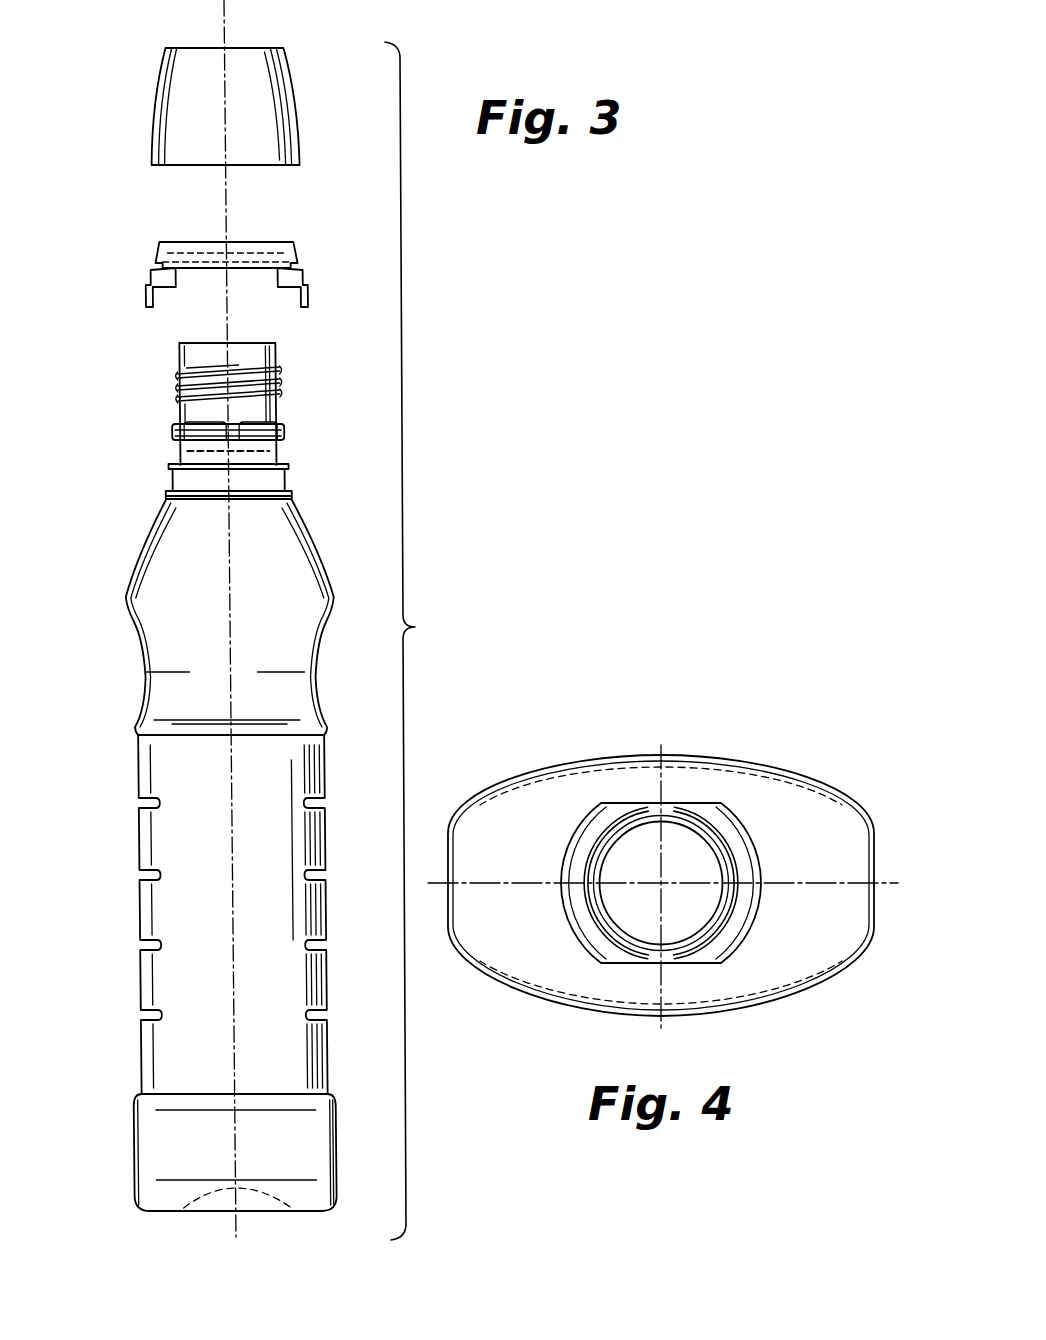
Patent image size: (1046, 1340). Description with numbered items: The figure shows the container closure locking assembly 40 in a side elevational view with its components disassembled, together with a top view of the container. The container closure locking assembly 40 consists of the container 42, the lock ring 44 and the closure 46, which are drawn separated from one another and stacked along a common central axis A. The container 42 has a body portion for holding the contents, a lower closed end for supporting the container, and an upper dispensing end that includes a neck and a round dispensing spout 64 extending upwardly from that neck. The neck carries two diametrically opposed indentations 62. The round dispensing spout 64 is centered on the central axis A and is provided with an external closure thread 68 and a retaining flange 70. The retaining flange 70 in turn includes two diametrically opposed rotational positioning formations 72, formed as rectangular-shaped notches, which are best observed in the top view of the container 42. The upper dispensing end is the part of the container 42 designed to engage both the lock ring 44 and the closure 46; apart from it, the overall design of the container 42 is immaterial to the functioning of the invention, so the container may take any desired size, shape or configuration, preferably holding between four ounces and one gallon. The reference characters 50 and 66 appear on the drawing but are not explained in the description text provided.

In FIG. 3, the central axis A is at (224, 23).
In FIG. 3, the container closure locking assembly 40 is at (420, 641).
In FIG. 4, the container 42 is at (808, 762).
In FIG. 3, the lock ring 44 is at (126, 264).
In FIG. 3, the closure 46 is at (128, 104).
In FIG. 3, the container body 50 is at (106, 562).
In FIG. 4, the indentations 62 is at (625, 800).
In FIG. 3, the round dispensing spout 64 is at (283, 342).
In FIG. 4, the round dispensing spout 64 is at (730, 858).
In FIG. 3, the opening 66 is at (223, 306).
In FIG. 3, the external closure thread 68 is at (286, 377).
In FIG. 3, the retaining flange 70 is at (286, 436).
In FIG. 4, the retaining flange 70 is at (712, 826).
In FIG. 4, the rotational positioning formations 72 is at (664, 813).